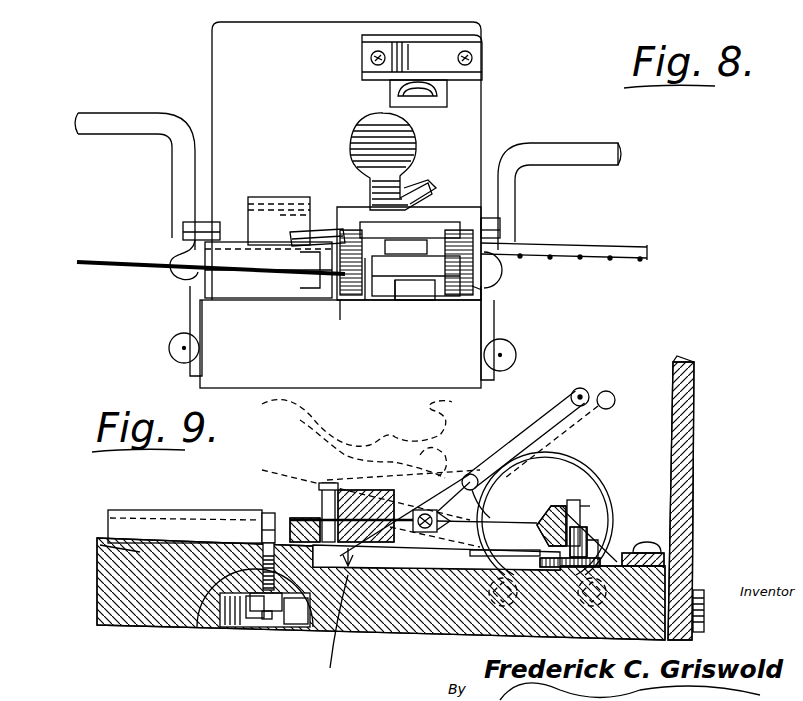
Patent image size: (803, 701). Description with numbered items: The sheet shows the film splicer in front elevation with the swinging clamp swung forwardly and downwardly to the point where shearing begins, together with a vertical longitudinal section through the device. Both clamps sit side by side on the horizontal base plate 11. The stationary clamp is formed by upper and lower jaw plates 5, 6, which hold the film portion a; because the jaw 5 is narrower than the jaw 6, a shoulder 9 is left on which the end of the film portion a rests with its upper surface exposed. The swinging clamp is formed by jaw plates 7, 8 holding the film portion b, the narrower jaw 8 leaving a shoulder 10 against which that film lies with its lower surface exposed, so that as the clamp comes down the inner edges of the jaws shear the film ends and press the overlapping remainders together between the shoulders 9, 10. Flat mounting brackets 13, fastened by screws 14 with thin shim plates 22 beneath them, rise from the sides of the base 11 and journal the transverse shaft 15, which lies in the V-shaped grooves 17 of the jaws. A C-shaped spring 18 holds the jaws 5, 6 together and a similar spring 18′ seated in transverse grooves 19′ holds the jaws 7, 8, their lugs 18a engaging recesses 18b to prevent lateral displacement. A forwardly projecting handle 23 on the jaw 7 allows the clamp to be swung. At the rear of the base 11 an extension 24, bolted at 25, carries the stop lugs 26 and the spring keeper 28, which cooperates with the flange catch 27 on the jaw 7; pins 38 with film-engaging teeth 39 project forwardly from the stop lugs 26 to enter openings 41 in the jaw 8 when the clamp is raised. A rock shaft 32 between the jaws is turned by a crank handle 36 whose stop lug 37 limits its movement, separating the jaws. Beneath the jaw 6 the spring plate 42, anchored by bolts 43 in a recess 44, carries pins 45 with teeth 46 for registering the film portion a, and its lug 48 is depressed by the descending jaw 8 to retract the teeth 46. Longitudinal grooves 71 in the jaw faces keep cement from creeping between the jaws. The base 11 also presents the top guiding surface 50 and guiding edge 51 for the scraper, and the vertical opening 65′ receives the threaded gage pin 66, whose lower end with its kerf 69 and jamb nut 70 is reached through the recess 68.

In FIG. 8, the upper jaw 5 is at (268, 270).
In FIG. 9, the upper jaw 5 is at (381, 490).
In FIG. 8, the lower jaw 6 is at (268, 280).
In FIG. 9, the lower jaw 6 is at (165, 510).
In FIG. 8, the upper jaw 7 is at (450, 208).
In FIG. 8, the lower jaw 8 is at (482, 288).
In FIG. 9, the lower jaw 8 is at (428, 628).
In FIG. 8, the shoulder 9 is at (338, 312).
In FIG. 8, the shoulder 10 is at (345, 230).
In FIG. 8, the base plate 11 is at (340, 344).
In FIG. 9, the base plate 11 is at (110, 600).
In FIG. 8, the mounting brackets 13 is at (190, 310).
In FIG. 9, the mounting brackets 13 is at (598, 548).
In FIG. 8, the screws 14 is at (175, 354).
In FIG. 9, the transverse shaft 15 is at (590, 506).
In FIG. 9, the V-shaped grooves 17 is at (577, 515).
In FIG. 8, the C-shaped spring 18 is at (282, 198).
In FIG. 9, the C-shaped spring 18 is at (593, 475).
In FIG. 8, the projecting lugs 18a is at (432, 322).
In FIG. 8, the longitudinal recesses 18b is at (422, 240).
In FIG. 8, the C-shaped spring 18′ is at (402, 302).
In FIG. 8, the transverse grooves 19′ is at (364, 304).
In FIG. 9, the shim plates 22 is at (530, 428).
In FIG. 8, the handle 23 is at (402, 148).
In FIG. 9, the handle 23 is at (262, 405).
In FIG. 8, the extension 24 is at (264, 36).
In FIG. 9, the extension 24 is at (697, 390).
In FIG. 9, the bolts 25 is at (707, 612).
In FIG. 8, the stop lugs 26 is at (462, 44).
In FIG. 8, the flange catch 27 is at (432, 196).
In FIG. 9, the flange catch 27 is at (398, 412).
In FIG. 8, the spring keeper 28 is at (392, 97).
In FIG. 9, the rock shaft 32 is at (413, 516).
In FIG. 8, the handle 36 is at (172, 188).
In FIG. 9, the handle 36 is at (500, 456).
In FIG. 8, the stop lug 37 is at (208, 224).
In FIG. 9, the stop lug 37 is at (470, 474).
In FIG. 8, the pins 38 is at (370, 60).
In FIG. 8, the film-engaging teeth 39 is at (377, 50).
In FIG. 8, the openings 41 is at (448, 332).
In FIG. 9, the spring plate 42 is at (420, 572).
In FIG. 9, the bolts 43 is at (690, 532).
In FIG. 9, the recess 44 is at (374, 568).
In FIG. 9, the pins 45 is at (264, 513).
In FIG. 9, the film-engaging teeth 46 is at (300, 506).
In FIG. 9, the lug 48 is at (305, 477).
In FIG. 9, the top guiding surface 50 is at (128, 552).
In FIG. 9, the guiding edge 51 is at (112, 527).
In FIG. 9, the vertical opening 65′ is at (258, 627).
In FIG. 9, the nut 66 is at (262, 524).
In FIG. 9, the recess 68 is at (350, 628).
In FIG. 9, the kerf 69 is at (298, 620).
In FIG. 9, the jamb nut 70 is at (284, 628).
In FIG. 8, the longitudinal grooves 71 is at (336, 260).
In FIG. 8, the film portion a is at (134, 274).
In FIG. 9, the film portion a is at (334, 628).
In FIG. 8, the film portion b is at (580, 244).